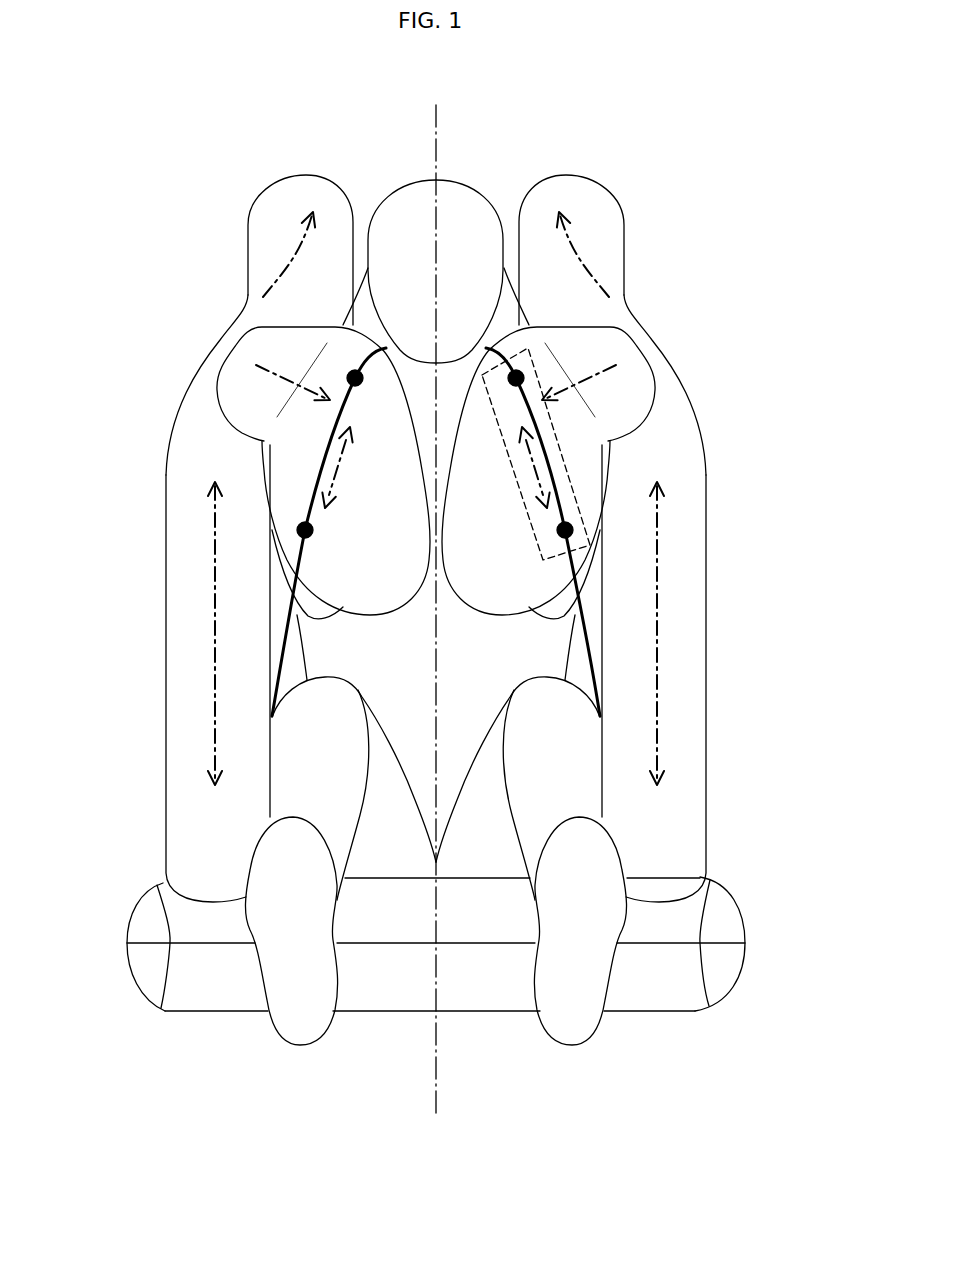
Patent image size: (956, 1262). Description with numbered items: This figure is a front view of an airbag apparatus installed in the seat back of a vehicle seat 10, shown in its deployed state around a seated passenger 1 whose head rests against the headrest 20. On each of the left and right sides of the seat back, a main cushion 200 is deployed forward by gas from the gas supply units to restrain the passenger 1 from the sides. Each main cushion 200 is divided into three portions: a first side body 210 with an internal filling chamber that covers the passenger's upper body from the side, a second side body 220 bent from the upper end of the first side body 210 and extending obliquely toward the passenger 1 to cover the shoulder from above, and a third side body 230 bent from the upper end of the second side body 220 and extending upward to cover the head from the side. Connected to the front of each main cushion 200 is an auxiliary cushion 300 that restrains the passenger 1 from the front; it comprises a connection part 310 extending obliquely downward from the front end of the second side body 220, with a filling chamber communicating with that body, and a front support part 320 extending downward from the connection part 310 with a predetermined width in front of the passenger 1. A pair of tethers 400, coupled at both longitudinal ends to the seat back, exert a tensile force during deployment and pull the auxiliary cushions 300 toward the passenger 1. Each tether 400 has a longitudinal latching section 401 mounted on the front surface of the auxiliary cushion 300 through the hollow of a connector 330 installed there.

The passenger 1 is at (460, 197).
The vehicle seat 10 is at (720, 973).
The headrest 20 is at (503, 307).
The main cushion 200 is at (495, 493).
The first side body 210 is at (680, 698).
The second side body 220 is at (650, 350).
The third side body 230 is at (572, 190).
The auxiliary cushion 300 is at (351, 380).
The connection part 310 is at (268, 344).
The front support part 320 is at (347, 568).
The connector 330 is at (350, 370).
The tether 400 is at (560, 457).
The latching section 401 is at (580, 481).